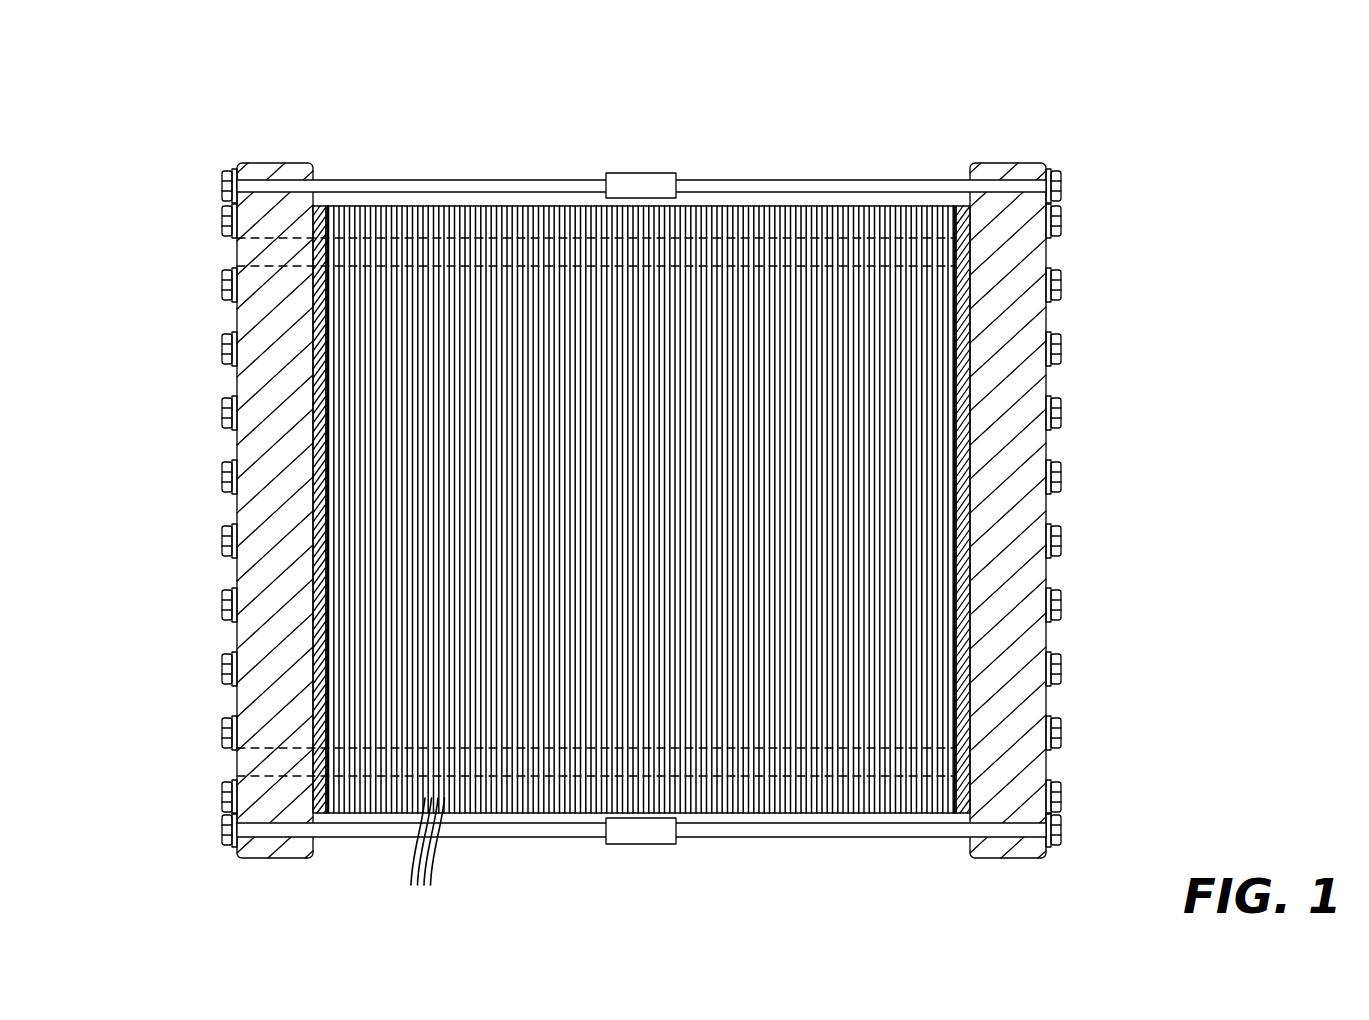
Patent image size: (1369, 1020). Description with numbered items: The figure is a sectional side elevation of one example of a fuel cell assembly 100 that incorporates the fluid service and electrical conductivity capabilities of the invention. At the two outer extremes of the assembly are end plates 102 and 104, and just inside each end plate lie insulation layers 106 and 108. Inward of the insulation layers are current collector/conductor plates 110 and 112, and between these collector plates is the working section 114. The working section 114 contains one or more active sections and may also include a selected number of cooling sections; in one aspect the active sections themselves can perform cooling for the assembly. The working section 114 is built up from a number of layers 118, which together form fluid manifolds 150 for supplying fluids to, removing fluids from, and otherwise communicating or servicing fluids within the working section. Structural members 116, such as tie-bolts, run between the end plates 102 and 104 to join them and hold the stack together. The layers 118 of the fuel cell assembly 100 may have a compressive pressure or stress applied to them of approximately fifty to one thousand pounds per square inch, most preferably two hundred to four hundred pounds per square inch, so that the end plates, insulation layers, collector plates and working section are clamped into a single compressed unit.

The fuel cell assembly 100 is at (672, 39).
The end plate 102 is at (243, 165).
The end plate 104 is at (1021, 163).
The insulation layer 106 is at (313, 205).
The insulation layer 108 is at (956, 208).
The current collector/conductor plate 110 is at (319, 203).
The current collector/conductor plate 112 is at (957, 206).
The working section 114 is at (731, 166).
The structural member 116 is at (567, 166).
The layer 118 is at (419, 858).
The fluid manifold 150 is at (476, 232).